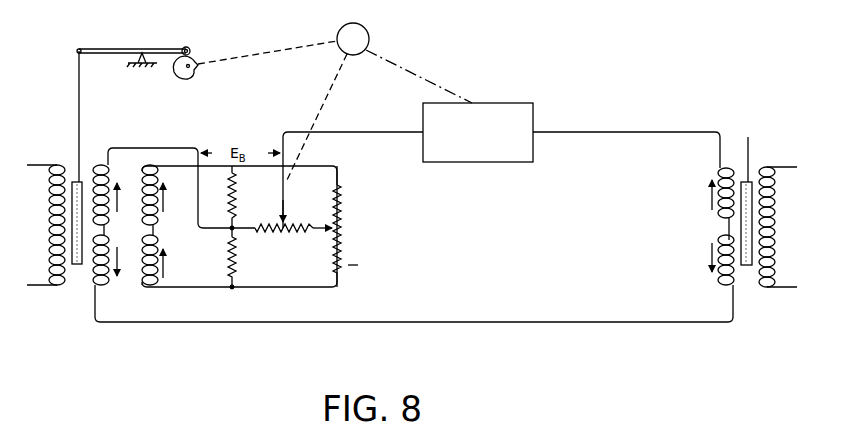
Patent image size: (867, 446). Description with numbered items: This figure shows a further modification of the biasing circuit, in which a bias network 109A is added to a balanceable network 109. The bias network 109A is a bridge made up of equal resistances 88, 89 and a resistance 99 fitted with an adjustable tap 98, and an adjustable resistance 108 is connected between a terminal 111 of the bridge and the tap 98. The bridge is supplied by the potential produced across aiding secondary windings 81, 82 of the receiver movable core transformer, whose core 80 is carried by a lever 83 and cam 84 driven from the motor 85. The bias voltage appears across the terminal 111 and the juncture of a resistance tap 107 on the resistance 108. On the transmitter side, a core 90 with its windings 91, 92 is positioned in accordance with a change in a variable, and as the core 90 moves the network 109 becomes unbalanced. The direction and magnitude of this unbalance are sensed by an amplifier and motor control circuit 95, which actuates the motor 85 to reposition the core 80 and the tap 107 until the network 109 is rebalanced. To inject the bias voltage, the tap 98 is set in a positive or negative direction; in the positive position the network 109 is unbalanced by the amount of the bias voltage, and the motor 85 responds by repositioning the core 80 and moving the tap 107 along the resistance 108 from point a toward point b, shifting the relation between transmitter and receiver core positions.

The core 80 is at (80, 216).
The secondary winding 81 is at (158, 214).
The secondary winding 82 is at (158, 236).
The lever arm 83 is at (97, 50).
The cam 84 is at (175, 78).
The motor 85 is at (340, 49).
The resistance 88 is at (237, 207).
The resistance 89 is at (237, 252).
The core 90 is at (746, 266).
The winding 91 is at (718, 283).
The winding 92 is at (718, 215).
The amplifier and motor control circuit 95 is at (487, 163).
The adjustable tap 98 is at (323, 226).
The resistance 99 is at (343, 212).
The resistance tap 107 is at (286, 199).
The adjustable resistance 108 is at (288, 231).
The balanceable network 109 is at (518, 273).
The bias network 109A is at (305, 286).
The terminal 111 is at (231, 229).